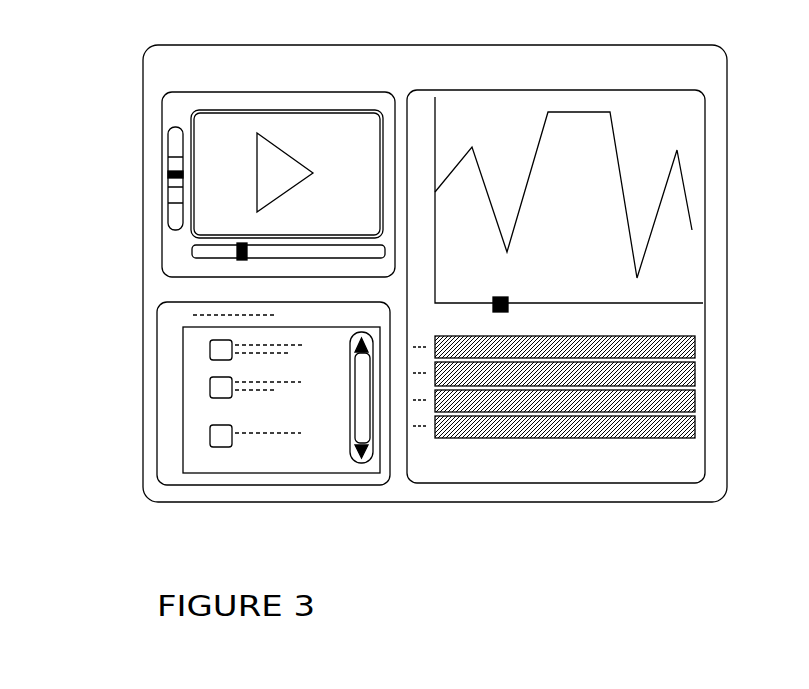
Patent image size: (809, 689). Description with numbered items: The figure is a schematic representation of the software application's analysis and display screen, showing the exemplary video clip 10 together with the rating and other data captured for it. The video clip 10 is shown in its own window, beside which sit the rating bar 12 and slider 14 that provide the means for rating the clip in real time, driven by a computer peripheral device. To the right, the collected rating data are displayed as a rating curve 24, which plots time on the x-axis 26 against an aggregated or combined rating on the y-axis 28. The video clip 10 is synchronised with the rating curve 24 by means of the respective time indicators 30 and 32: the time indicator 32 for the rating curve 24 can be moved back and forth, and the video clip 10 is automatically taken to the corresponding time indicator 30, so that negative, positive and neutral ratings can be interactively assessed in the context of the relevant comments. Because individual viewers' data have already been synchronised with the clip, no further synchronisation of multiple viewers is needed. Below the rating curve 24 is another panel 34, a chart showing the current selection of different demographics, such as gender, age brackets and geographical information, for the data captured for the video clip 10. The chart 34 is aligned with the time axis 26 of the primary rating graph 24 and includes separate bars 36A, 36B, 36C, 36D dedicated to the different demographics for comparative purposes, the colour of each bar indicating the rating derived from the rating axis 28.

The video clip 10 is at (217, 138).
The rating bar 12 is at (167, 197).
The slider 14 is at (170, 170).
The rating curve 24 is at (670, 118).
The x-axis 26 is at (712, 295).
The y-axis 28 is at (436, 108).
The time indicator 30 is at (237, 253).
The time indicator 32 is at (508, 305).
The panel 34 is at (537, 468).
The bar 36A is at (463, 357).
The bar 36B is at (510, 387).
The bar 36C is at (617, 438).
The bar 36D is at (675, 438).